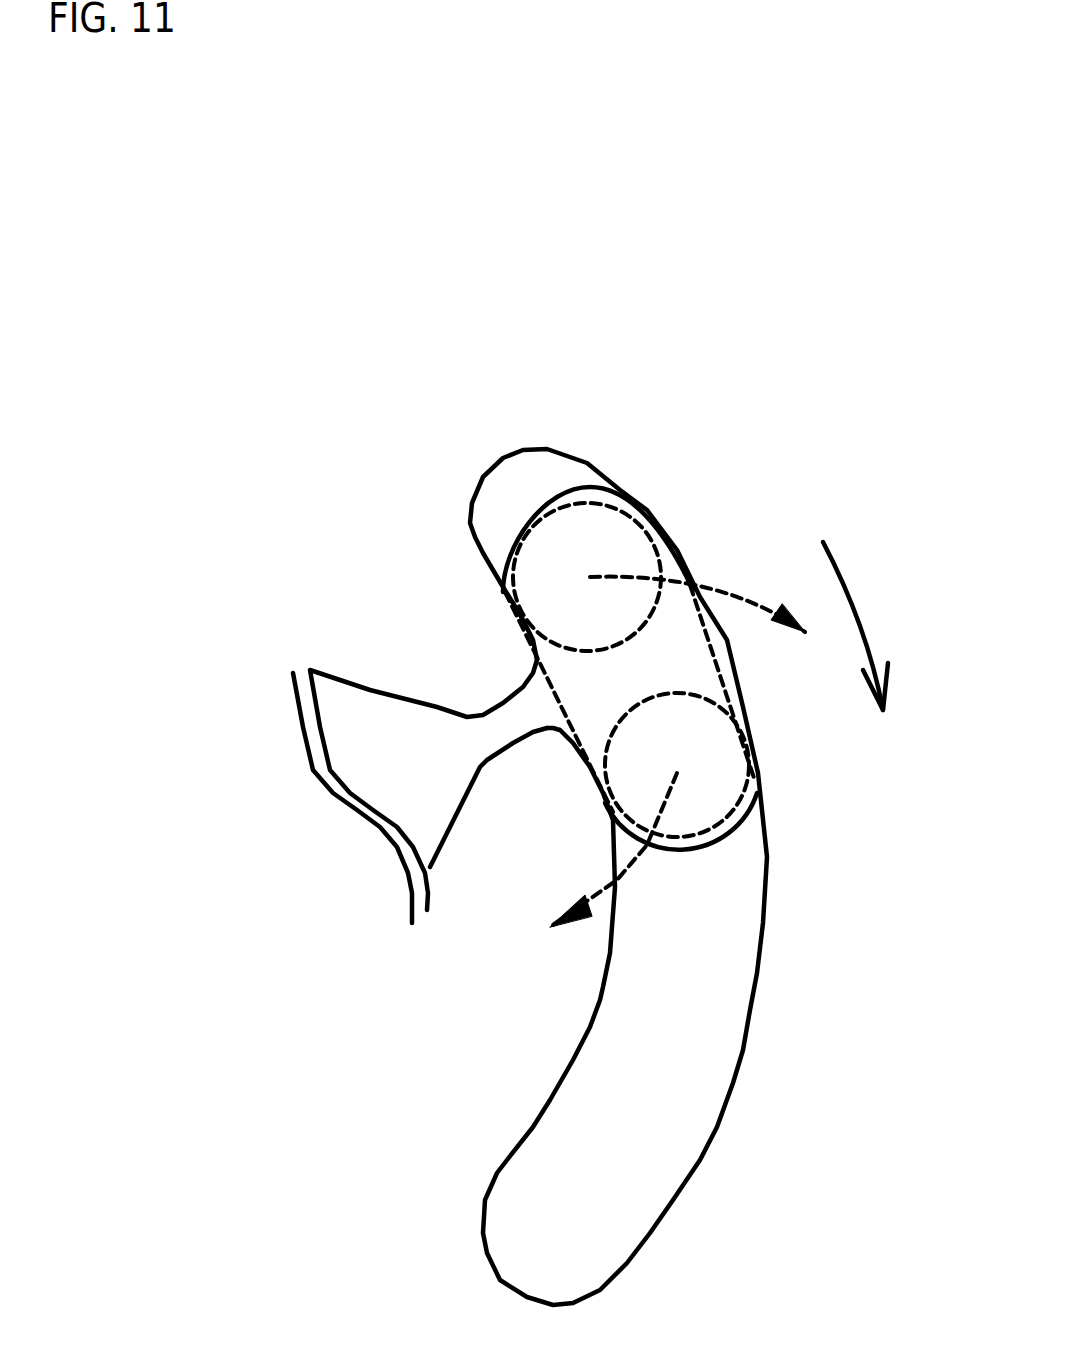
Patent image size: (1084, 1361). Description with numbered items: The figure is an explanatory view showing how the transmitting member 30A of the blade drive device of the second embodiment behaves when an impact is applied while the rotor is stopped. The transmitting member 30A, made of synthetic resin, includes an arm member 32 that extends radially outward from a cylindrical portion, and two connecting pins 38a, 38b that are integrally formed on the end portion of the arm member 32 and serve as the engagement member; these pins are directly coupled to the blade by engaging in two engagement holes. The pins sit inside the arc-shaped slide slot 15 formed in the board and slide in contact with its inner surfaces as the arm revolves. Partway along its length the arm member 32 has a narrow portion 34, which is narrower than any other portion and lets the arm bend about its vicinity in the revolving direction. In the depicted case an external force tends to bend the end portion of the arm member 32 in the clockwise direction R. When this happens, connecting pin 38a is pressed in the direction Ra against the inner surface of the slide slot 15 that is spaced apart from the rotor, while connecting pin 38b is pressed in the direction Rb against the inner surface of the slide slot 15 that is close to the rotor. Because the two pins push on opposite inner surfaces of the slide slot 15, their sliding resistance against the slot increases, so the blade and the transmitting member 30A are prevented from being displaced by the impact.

The slide slot 15 is at (563, 1090).
The transmitting member 30A is at (348, 710).
The arm member 32 is at (488, 834).
The narrow portion 34 is at (423, 749).
The connecting pin 38a is at (618, 586).
The connecting pin 38b is at (762, 711).
The direction Ra is at (710, 533).
The direction Rb is at (714, 893).
The clockwise direction R is at (867, 626).